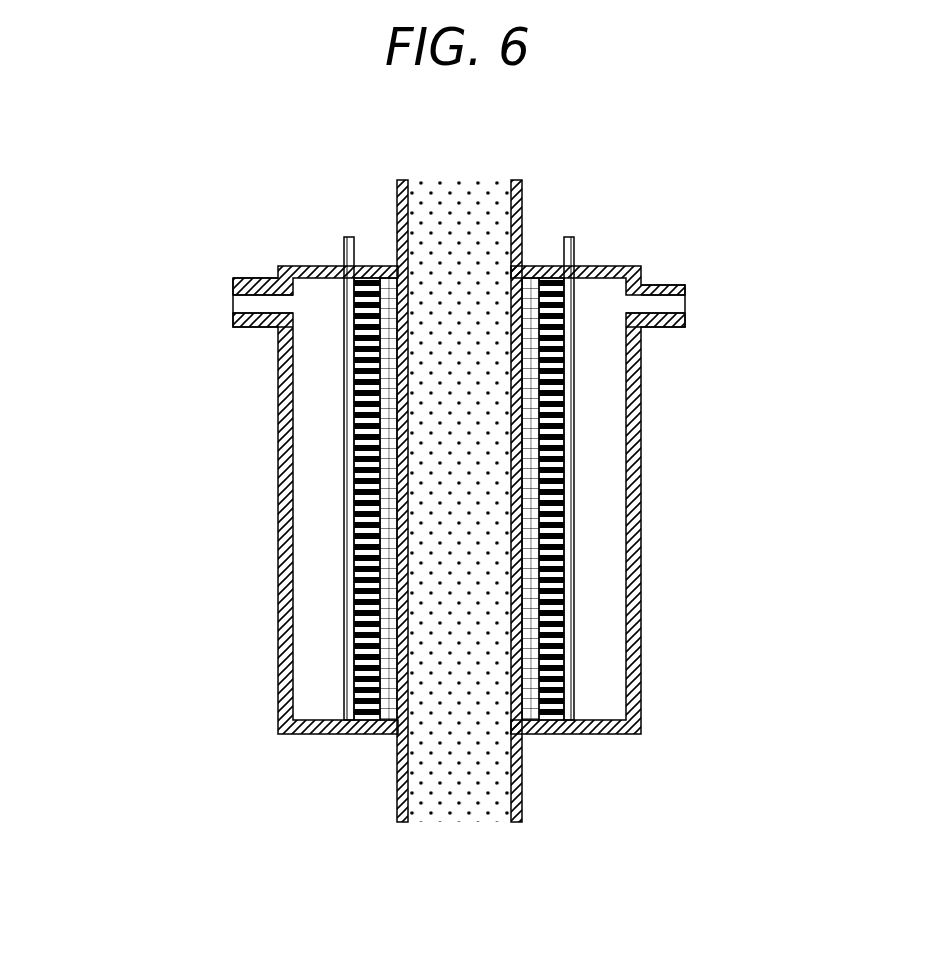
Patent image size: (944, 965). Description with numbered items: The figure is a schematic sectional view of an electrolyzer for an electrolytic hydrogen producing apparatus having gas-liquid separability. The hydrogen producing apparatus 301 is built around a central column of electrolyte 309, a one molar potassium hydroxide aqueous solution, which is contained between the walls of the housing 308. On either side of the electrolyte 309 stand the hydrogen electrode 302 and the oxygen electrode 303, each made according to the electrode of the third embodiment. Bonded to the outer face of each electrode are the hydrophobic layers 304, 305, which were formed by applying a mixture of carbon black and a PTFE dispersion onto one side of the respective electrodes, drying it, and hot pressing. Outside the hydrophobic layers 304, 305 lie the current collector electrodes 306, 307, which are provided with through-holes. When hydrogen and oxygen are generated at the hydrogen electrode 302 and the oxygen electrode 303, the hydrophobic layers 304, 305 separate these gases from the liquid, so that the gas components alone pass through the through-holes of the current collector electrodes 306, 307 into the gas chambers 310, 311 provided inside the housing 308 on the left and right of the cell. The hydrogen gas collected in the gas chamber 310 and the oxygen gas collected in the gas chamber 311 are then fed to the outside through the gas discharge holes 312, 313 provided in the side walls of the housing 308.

The hydrogen producing apparatus 301 is at (97, 172).
The hydrogen electrode 302 is at (353, 640).
The oxygen electrode 303 is at (565, 640).
The hydrophobic layer 304 is at (353, 483).
The hydrophobic layer 305 is at (565, 483).
The current collector electrode 306 is at (349, 237).
The current collector electrode 307 is at (569, 237).
The housing 308 is at (522, 735).
The electrolyte 309 is at (465, 780).
The gas chamber 310 is at (318, 687).
The gas chamber 311 is at (607, 691).
The gas discharge hole 312 is at (278, 302).
The gas discharge hole 313 is at (647, 307).